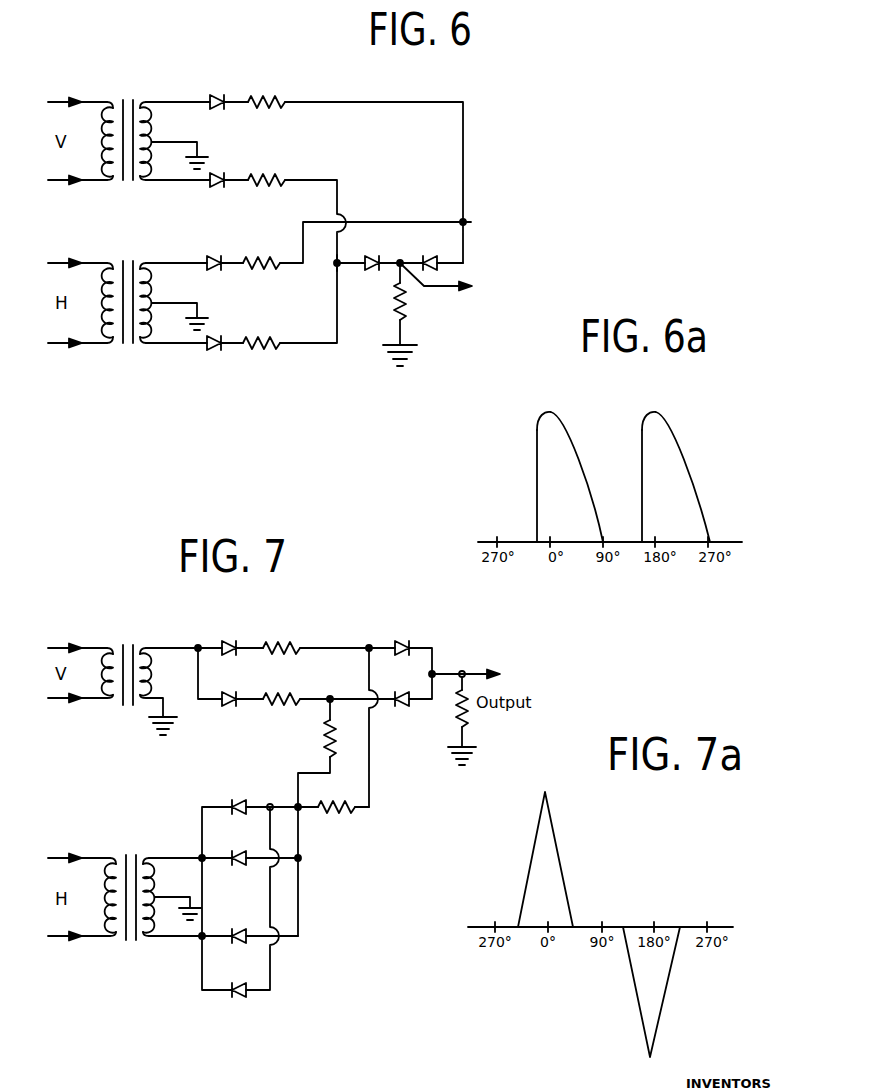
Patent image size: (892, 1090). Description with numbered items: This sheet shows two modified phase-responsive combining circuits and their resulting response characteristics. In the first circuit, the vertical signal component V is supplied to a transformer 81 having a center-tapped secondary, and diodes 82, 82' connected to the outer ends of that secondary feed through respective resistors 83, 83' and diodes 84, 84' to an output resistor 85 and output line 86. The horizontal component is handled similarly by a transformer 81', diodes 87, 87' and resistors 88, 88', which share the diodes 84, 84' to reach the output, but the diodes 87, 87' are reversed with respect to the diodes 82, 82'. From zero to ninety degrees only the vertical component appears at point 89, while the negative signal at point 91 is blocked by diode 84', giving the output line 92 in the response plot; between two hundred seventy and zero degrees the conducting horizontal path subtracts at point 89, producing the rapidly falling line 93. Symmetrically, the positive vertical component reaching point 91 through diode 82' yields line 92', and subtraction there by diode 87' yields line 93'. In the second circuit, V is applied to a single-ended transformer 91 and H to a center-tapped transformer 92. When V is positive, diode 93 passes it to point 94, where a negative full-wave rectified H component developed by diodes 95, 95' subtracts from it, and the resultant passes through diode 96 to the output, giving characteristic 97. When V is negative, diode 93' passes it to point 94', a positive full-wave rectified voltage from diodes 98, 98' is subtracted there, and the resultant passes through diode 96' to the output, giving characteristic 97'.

In FIG. 6, the transformer 81 is at (155, 121).
In FIG. 6, the transformer 81' is at (155, 287).
In FIG. 6, the diode 82 is at (220, 85).
In FIG. 6, the diode 82' is at (224, 162).
In FIG. 6, the resistor 83 is at (280, 84).
In FIG. 6, the resistor 83' is at (279, 165).
In FIG. 6, the diode 84 is at (425, 250).
In FIG. 6, the diode 84' is at (365, 250).
In FIG. 6, the output resistor 85 is at (396, 295).
In FIG. 6, the output line 86 is at (448, 280).
In FIG. 6, the diode 87 is at (203, 247).
In FIG. 6, the diode 87' is at (226, 322).
In FIG. 6, the resistor 88 is at (261, 248).
In FIG. 6, the resistor 88' is at (268, 328).
In FIG. 6, the point 89 is at (465, 222).
In FIG. 6, the point / single-ended transformer 91 is at (336, 265).
In FIG. 7, the point / single-ended transformer 91 is at (145, 632).
In FIG. 6A, the line / center-tapped transformer 92 is at (576, 477).
In FIG. 7, the line / center-tapped transformer 92 is at (153, 881).
In FIG. 6A, the line 92' is at (689, 477).
In FIG. 6A, the line / diode 93 is at (509, 486).
In FIG. 7, the line / diode 93 is at (261, 629).
In FIG. 6A, the line / diode 93' is at (623, 486).
In FIG. 7, the line / diode 93' is at (254, 720).
In FIG. 7, the point 94 is at (359, 628).
In FIG. 7, the point 94' is at (325, 680).
In FIG. 7, the diode 95 is at (243, 789).
In FIG. 7, the diode 95' is at (245, 1014).
In FIG. 7, the diode 96 is at (414, 630).
In FIG. 7, the diode 96' is at (410, 720).
In FIG. 7A, the characteristic 97 is at (563, 859).
In FIG. 7A, the characteristic 97' is at (669, 992).
In FIG. 7, the diode 98 is at (243, 873).
In FIG. 7, the diode 98' is at (229, 921).